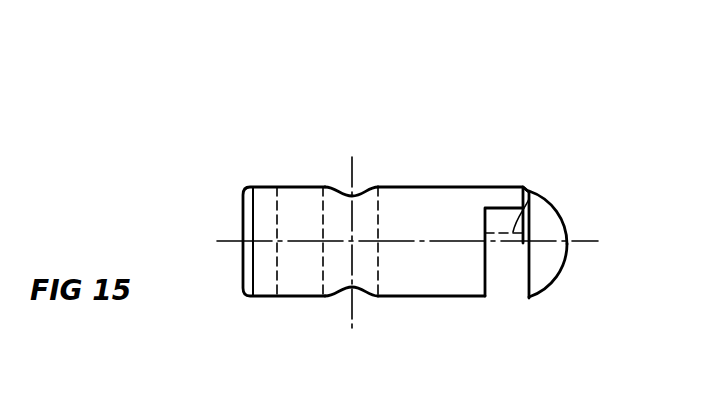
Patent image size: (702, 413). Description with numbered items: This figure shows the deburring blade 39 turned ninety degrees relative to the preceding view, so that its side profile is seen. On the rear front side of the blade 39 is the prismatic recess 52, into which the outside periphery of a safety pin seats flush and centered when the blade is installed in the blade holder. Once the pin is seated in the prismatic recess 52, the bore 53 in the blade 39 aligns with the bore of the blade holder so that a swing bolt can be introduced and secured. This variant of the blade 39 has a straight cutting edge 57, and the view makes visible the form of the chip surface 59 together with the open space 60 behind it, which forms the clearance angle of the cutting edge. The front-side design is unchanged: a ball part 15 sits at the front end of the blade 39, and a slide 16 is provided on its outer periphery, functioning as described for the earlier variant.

The deburring blade 39 is at (452, 143).
The prismatic recess 52 is at (264, 207).
The bore 53 is at (363, 222).
The straight cutting edge 57 is at (510, 247).
The open space 60 is at (490, 207).
The chip surface 59 is at (530, 192).
The slide 16 is at (565, 232).
The ball part 15 is at (545, 258).